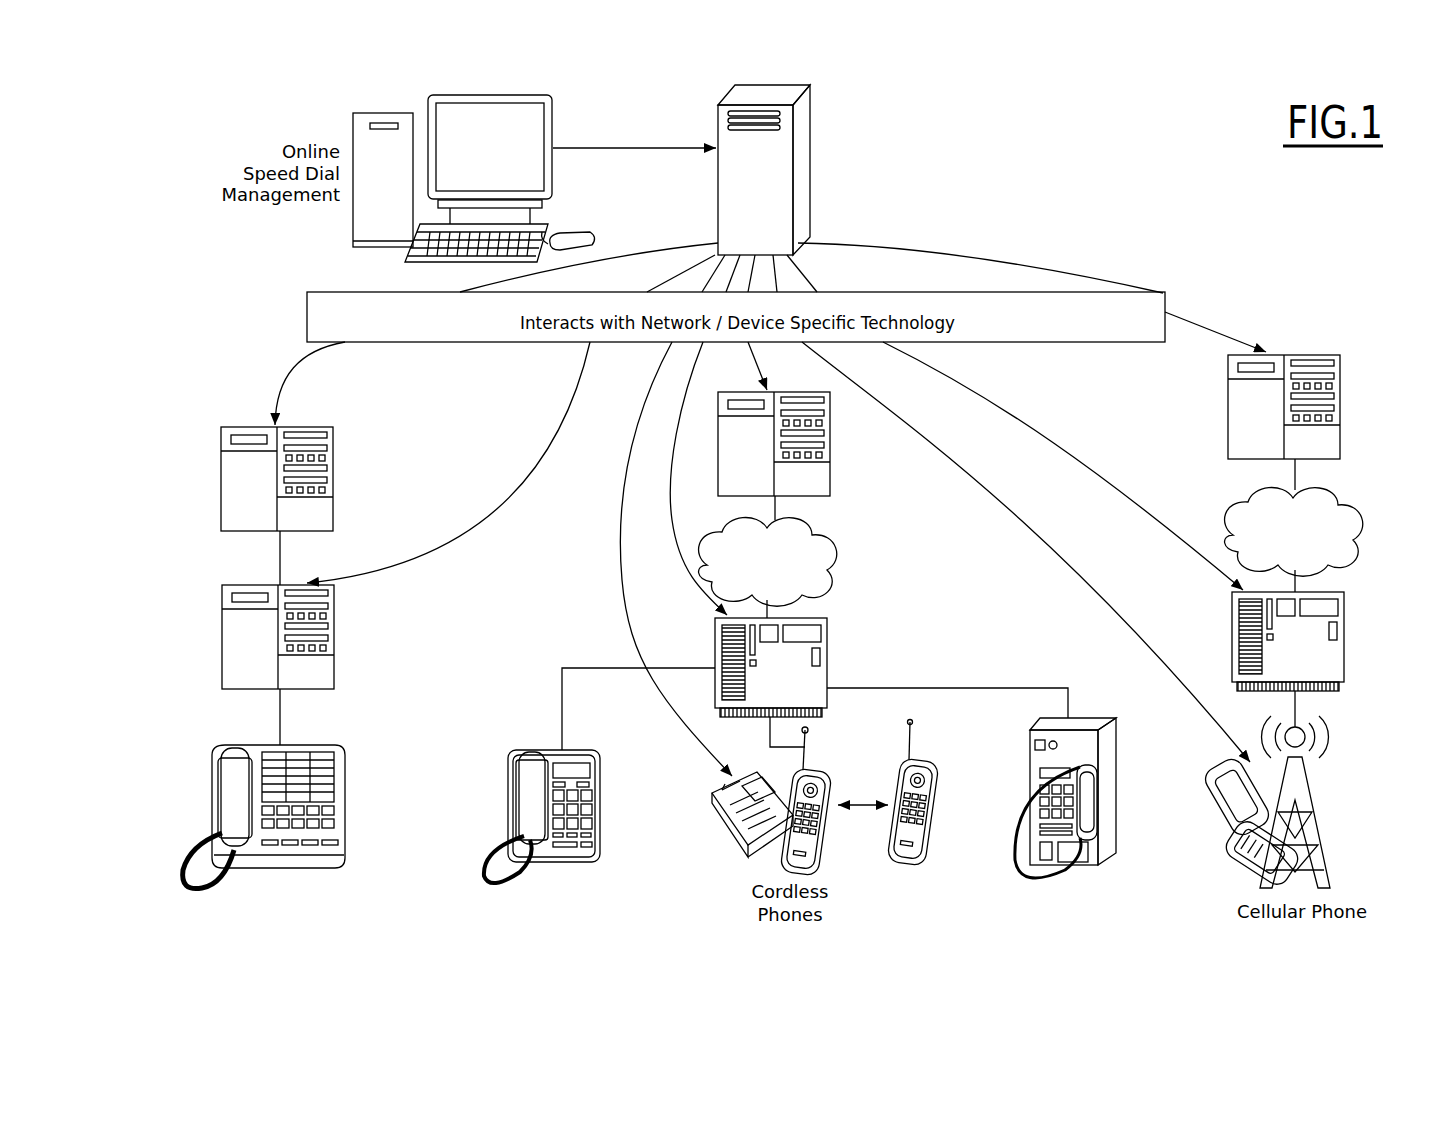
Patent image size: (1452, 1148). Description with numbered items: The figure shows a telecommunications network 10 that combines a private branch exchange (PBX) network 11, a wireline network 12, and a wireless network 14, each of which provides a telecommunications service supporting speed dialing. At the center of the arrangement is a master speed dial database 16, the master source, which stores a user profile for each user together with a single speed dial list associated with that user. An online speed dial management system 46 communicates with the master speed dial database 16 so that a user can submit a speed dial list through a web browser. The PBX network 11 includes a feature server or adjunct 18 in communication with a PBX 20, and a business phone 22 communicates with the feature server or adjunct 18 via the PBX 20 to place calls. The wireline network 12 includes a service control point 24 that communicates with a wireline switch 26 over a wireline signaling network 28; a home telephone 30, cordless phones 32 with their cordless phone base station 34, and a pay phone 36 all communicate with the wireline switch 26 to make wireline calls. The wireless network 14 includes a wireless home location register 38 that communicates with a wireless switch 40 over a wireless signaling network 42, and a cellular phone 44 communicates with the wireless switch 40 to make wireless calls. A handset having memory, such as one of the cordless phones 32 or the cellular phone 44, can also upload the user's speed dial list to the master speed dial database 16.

The telecommunications network 10 is at (1143, 132).
The private branch exchange (PBX) network 11 is at (513, 566).
The wireline network 12 is at (940, 567).
The wireless network 14 is at (1360, 496).
The master speed dial database 16 is at (813, 115).
The feature server or adjunct 18 is at (221, 472).
The PBX 20 is at (222, 617).
The business phone 22 is at (345, 770).
The service control point (SCP) 24 is at (752, 392).
The wireline switch 26 is at (713, 635).
The wireline signaling network 28 is at (838, 560).
The home telephone 30 is at (507, 772).
The cordless phones 32 is at (822, 766).
The cordless phone base station 34 is at (744, 839).
The pay phone 36 is at (1117, 750).
The wireless home location register (HLR) 38 is at (1318, 355).
The wireless switch 40 is at (1347, 650).
The wireless signaling network 42 is at (1340, 562).
The cellular phone 44 is at (1222, 808).
The online speed dial management system 46 is at (553, 113).